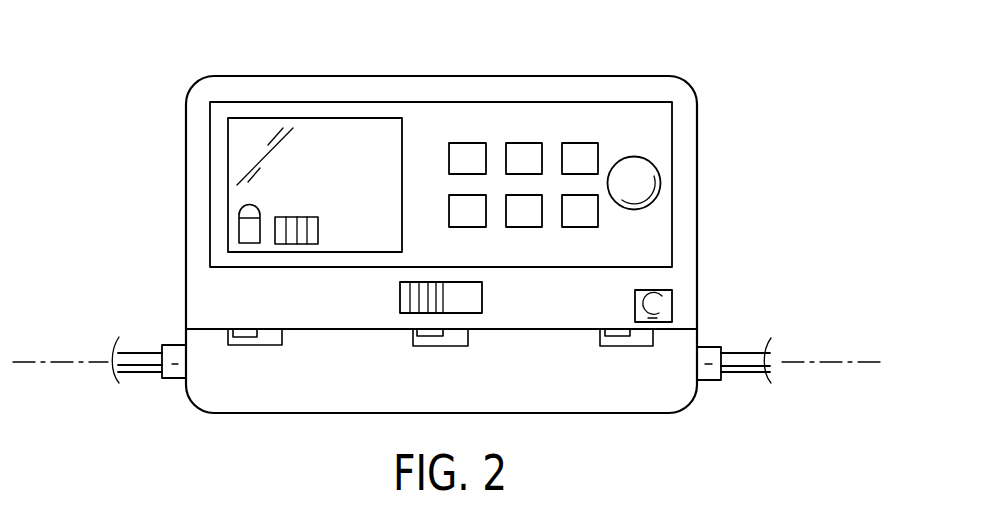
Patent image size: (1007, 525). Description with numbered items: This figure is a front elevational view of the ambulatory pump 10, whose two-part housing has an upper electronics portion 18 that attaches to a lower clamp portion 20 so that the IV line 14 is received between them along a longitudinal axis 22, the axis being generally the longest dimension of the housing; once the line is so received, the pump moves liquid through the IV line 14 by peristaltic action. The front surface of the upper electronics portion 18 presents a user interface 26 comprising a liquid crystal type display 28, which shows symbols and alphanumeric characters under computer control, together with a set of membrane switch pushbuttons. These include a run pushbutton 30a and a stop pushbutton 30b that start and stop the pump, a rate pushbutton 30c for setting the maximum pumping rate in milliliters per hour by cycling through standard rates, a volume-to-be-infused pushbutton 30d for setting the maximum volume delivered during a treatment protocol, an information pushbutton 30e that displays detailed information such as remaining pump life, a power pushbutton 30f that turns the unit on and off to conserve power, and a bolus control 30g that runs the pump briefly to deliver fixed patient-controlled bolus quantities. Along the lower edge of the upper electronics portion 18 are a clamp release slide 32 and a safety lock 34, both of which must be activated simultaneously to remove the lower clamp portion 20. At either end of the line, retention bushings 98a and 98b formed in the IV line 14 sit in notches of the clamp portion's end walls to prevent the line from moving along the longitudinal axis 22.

The ambulatory pump 10 is at (678, 40).
The IV line 14 is at (140, 372).
The upper electronics portion 18 is at (678, 78).
The lower clamp portion 20 is at (545, 395).
The longitudinal axis 22 is at (808, 362).
The user interface 26 is at (210, 185).
The display 28 is at (228, 120).
The run pushbutton 30a is at (580, 227).
The stop pushbutton 30b is at (513, 227).
The rate pushbutton 30c is at (477, 227).
The volume to be infused pushbutton 30d is at (477, 143).
The information pushbutton 30e is at (513, 143).
The power pushbutton 30f is at (580, 143).
The bolus pushbutton 30g is at (652, 167).
The clamp release slide 32 is at (410, 292).
The safety lock 34 is at (672, 305).
The retention bushing 98a is at (173, 378).
The retention bushing 98b is at (709, 380).